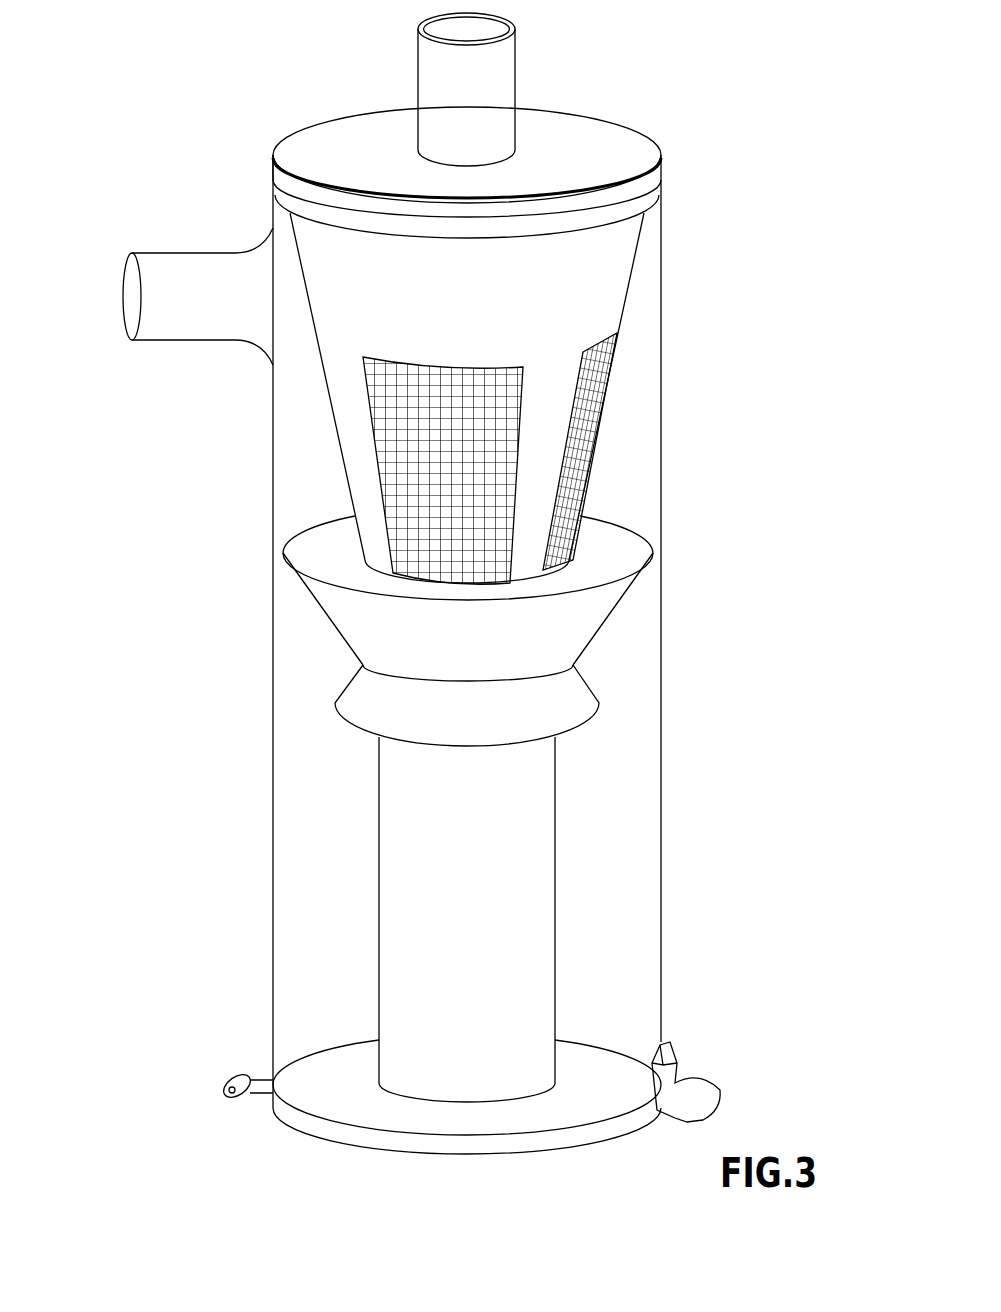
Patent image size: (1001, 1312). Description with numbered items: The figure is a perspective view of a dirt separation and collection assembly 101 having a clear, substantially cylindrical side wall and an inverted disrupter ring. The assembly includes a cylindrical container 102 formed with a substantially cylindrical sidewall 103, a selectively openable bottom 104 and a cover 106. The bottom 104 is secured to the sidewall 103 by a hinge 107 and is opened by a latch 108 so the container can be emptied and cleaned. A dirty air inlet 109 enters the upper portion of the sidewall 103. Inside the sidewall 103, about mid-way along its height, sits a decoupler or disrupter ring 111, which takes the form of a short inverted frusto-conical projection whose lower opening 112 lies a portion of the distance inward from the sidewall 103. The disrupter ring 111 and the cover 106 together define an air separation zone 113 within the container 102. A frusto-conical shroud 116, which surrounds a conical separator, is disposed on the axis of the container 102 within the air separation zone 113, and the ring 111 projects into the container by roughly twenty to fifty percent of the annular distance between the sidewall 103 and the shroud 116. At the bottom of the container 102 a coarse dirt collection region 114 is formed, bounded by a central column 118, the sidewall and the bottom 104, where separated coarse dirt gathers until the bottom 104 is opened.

The dirt separation and collection assembly 101 is at (727, 83).
The cylindrical container 102 is at (663, 695).
The substantially cylindrical sidewall 103 is at (663, 813).
The selectively openable bottom 104 is at (613, 1133).
The cover 106 is at (626, 147).
The hinge 107 is at (228, 1092).
The latch 108 is at (695, 1073).
The dirty air inlet 109 is at (182, 253).
The disrupter ring 111 is at (620, 553).
The lower opening 112 is at (337, 633).
The air separation zone 113 is at (633, 413).
The coarse dirt collection region 114 is at (335, 1048).
The frusto-conical shroud 116 is at (393, 465).
The central column 118 is at (535, 928).